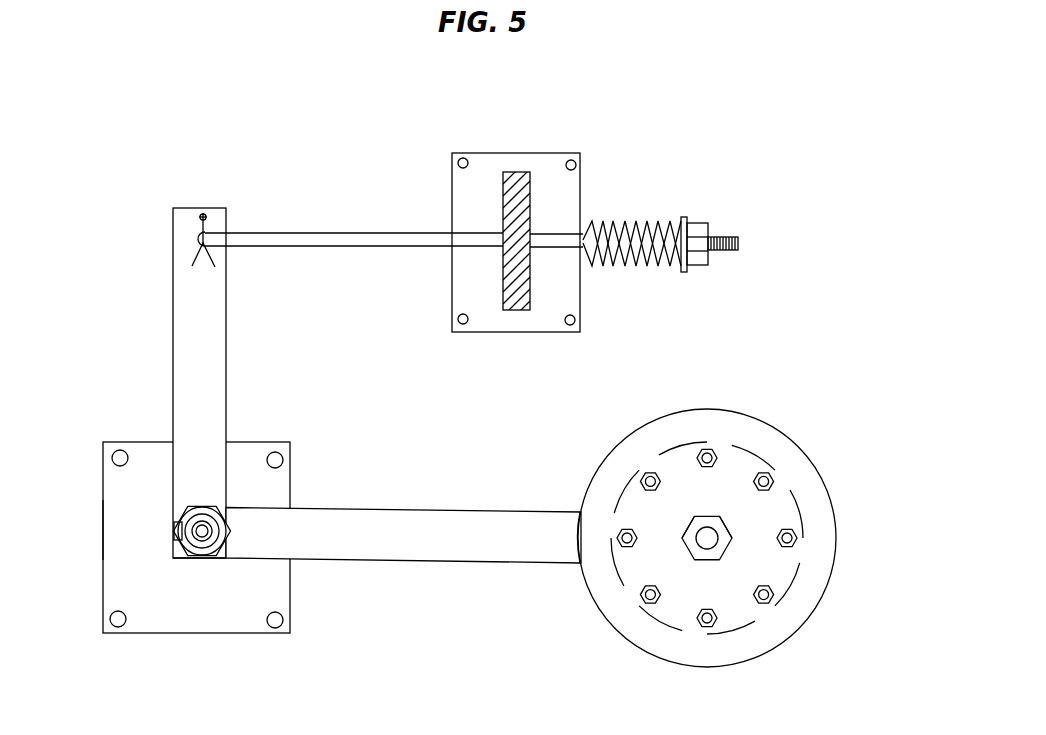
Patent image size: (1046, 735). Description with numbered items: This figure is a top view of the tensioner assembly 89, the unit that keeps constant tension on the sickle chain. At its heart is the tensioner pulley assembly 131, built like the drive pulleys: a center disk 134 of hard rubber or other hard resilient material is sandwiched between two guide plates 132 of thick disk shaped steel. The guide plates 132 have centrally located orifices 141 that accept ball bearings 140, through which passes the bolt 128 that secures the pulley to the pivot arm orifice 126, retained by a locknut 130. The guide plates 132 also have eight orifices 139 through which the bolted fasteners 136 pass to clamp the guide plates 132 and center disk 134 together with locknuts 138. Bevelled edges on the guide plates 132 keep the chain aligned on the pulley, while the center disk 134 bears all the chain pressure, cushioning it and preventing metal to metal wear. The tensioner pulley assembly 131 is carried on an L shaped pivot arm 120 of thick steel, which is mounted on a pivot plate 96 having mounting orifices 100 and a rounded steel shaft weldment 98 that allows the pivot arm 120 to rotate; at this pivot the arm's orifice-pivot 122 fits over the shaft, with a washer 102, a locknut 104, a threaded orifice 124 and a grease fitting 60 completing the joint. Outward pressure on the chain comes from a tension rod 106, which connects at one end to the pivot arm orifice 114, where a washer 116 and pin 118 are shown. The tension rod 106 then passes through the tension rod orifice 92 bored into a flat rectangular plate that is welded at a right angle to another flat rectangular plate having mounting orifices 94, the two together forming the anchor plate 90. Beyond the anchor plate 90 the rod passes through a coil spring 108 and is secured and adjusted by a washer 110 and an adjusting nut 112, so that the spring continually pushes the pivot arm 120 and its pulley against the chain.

The grease fitting 60 is at (192, 532).
The tensioner assembly 89 is at (100, 528).
The anchor plate 90 is at (517, 153).
The tension rod orifice 92 is at (530, 200).
The orifice 94 is at (461, 158).
The pivot plate 96 is at (258, 441).
The shaft weldment 98 is at (203, 533).
The orifices 100 is at (110, 618).
The washer 102 is at (227, 517).
The locknut 104 is at (222, 548).
The tension rod 106 is at (337, 232).
The coil spring 108 is at (635, 268).
The washer 110 is at (686, 273).
The adjusting nut 112 is at (708, 263).
The pivot arm orifice 114 is at (203, 232).
The washer 116 is at (187, 232).
The pin 118 is at (190, 260).
The pivot arm 120 is at (173, 355).
The orifice-pivot 122 is at (177, 520).
The threaded orifice 124 is at (183, 555).
The pivot arm orifice 126 is at (722, 523).
The bolt 128 is at (704, 529).
The locknut 130 is at (690, 523).
The tensioner pulley assembly 131 is at (792, 652).
The guide plate 132 is at (602, 462).
The center disk 134 is at (775, 470).
The bolted fasteners 136 is at (773, 601).
The locknut 138 is at (798, 539).
The orifice 139 is at (640, 596).
The bearing 140 is at (719, 533).
The orifice 141 is at (697, 555).